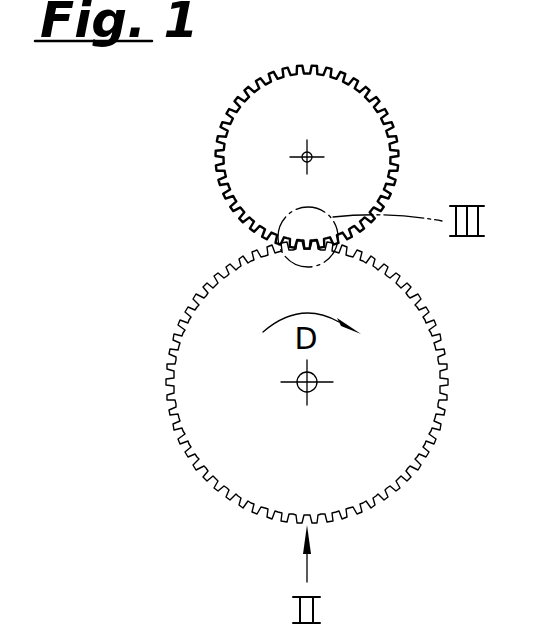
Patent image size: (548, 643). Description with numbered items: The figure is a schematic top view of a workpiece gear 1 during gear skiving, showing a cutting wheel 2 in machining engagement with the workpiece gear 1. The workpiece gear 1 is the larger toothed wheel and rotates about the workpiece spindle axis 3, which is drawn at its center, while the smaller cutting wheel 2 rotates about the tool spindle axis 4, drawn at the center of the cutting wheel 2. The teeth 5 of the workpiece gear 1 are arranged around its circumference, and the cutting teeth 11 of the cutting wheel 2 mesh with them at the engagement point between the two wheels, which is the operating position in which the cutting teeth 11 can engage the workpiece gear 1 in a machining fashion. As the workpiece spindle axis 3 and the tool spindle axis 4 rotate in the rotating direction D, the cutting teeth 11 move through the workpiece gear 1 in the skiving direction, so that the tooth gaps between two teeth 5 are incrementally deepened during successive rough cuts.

The workpiece gear 1 is at (468, 452).
The cutting wheel 2 is at (433, 140).
The workpiece spindle axis 3 is at (310, 387).
The tool spindle axis 4 is at (310, 151).
The teeth 5 is at (218, 273).
The cutting teeth 11 is at (223, 140).